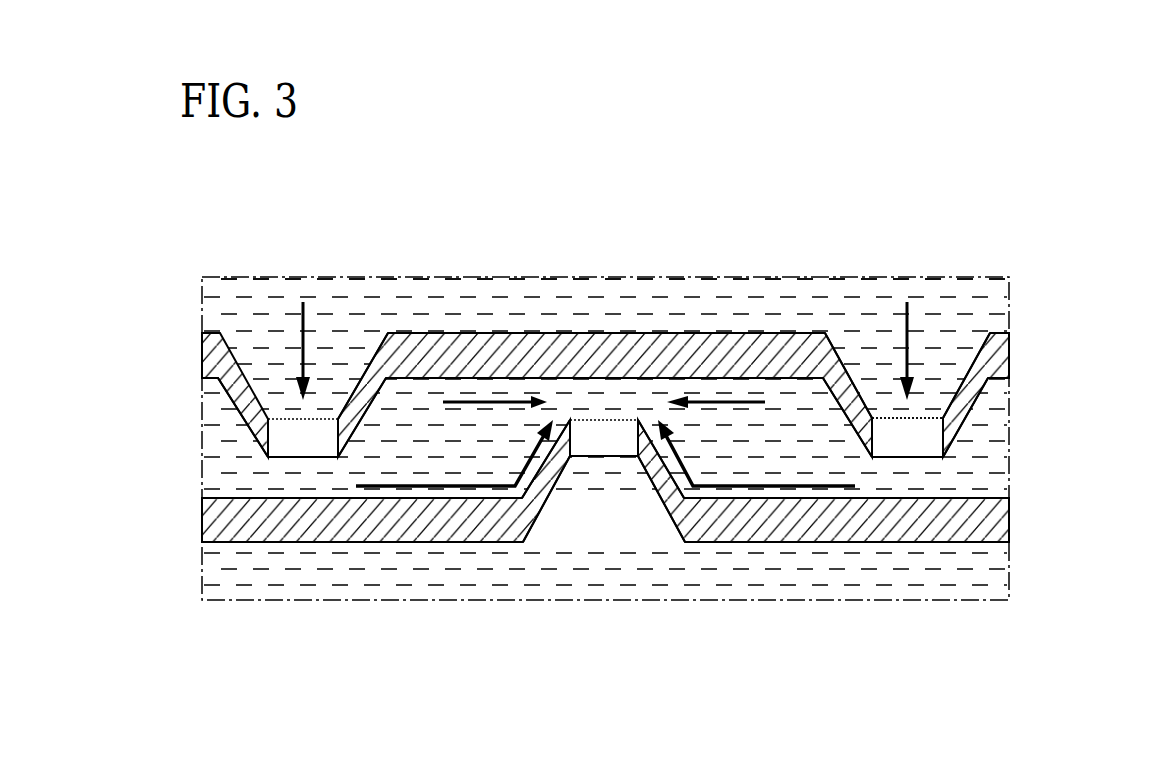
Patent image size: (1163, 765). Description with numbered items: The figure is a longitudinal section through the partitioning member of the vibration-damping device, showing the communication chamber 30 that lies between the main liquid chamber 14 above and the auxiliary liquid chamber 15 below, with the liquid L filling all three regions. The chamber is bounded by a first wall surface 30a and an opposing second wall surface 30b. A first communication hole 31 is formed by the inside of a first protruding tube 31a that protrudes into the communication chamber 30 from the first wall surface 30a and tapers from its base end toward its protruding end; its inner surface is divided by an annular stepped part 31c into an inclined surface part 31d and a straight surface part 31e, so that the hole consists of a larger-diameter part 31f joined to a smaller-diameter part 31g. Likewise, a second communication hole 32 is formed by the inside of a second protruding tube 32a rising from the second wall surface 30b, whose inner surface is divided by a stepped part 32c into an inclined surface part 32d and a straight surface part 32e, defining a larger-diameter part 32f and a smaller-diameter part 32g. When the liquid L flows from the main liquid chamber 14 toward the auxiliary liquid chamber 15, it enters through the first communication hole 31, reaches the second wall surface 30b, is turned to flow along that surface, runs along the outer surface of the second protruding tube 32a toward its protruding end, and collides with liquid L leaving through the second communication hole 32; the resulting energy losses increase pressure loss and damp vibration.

The main liquid chamber 14 is at (1000, 306).
The auxiliary liquid chamber 15 is at (1000, 567).
The communication chamber 30 is at (1000, 446).
The first wall surface 30a is at (218, 379).
The second wall surface 30b is at (213, 498).
The first communication hole 31 is at (355, 383).
The first protruding tube 31a is at (363, 413).
The stepped part 31c is at (872, 418).
The inclined surface part 31d is at (867, 390).
The straight surface part 31e is at (875, 442).
The larger-diameter part 31f is at (967, 381).
The smaller-diameter part 31g is at (942, 436).
The second communication hole 32 is at (613, 688).
The second protruding tube 32a is at (664, 505).
The stepped part 32c is at (637, 454).
The inclined surface part 32d is at (653, 488).
The straight surface part 32e is at (640, 436).
The larger-diameter part 32f is at (540, 500).
The smaller-diameter part 32g is at (571, 437).
The liquid L is at (805, 300).